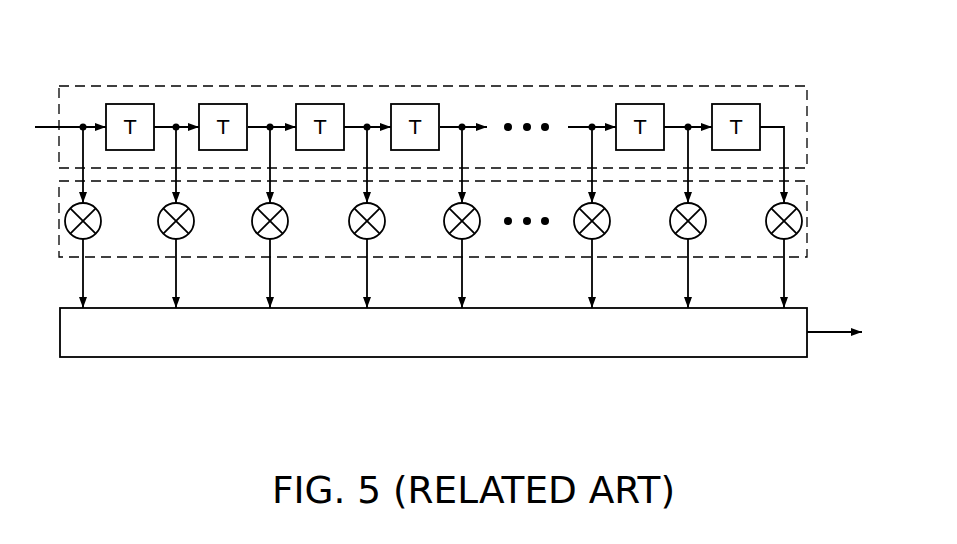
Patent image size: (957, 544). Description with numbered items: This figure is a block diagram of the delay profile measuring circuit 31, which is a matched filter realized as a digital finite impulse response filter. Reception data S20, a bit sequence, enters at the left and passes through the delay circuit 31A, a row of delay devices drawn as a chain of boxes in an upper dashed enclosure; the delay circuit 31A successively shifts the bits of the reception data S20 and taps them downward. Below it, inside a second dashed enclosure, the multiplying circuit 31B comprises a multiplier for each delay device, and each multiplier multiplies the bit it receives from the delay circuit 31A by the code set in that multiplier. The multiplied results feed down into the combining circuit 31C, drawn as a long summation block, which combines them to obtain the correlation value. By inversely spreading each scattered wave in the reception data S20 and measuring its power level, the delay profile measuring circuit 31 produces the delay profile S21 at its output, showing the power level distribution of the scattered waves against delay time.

The delay profile measuring circuit 31 is at (866, 34).
The delay circuit 31A is at (756, 86).
The multiplying circuit 31B is at (807, 217).
The combining circuit 31C is at (807, 308).
The reception data S20 is at (43, 125).
The delay profile S21 is at (827, 337).